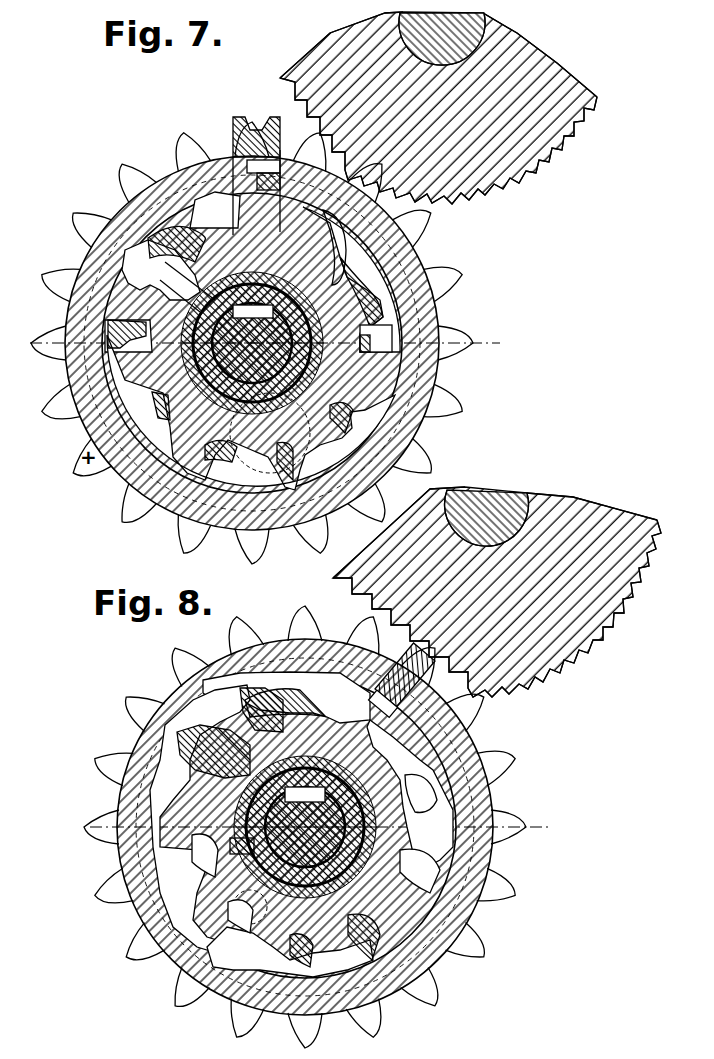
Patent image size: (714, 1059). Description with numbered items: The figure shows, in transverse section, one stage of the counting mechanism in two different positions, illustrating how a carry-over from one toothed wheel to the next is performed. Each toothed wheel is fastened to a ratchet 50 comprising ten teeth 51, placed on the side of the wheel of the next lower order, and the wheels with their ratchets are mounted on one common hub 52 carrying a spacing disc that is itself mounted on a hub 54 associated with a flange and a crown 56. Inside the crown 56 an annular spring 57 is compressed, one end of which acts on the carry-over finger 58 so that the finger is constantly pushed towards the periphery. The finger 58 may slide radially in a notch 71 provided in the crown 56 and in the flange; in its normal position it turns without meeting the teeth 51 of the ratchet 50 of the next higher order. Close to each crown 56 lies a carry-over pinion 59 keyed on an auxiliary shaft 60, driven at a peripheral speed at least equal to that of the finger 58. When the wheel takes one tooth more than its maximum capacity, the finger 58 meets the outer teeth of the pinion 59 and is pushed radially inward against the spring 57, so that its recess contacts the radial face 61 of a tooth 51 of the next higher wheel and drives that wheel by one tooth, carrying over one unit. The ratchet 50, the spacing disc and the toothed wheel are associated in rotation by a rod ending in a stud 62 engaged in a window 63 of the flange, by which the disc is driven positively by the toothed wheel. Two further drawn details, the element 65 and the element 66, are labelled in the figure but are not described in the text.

In FIG. 7, the ratchet 50 is at (168, 412).
In FIG. 8, the ratchet 50 is at (225, 870).
In FIG. 7, the tooth 51 is at (370, 290).
In FIG. 8, the tooth 51 is at (428, 898).
In FIG. 7, the hub 52 is at (180, 347).
In FIG. 7, the hub 54 is at (350, 408).
In FIG. 8, the hub 54 is at (403, 934).
In FIG. 7, the crown 56 is at (135, 480).
In FIG. 8, the crown 56 is at (160, 905).
In FIG. 7, the annular spring 57 is at (236, 135).
In FIG. 8, the annular spring 57 is at (335, 692).
In FIG. 7, the carry-over finger 58 is at (245, 120).
In FIG. 8, the carry-over finger 58 is at (432, 672).
In FIG. 7, the carry-over pinion 59 is at (548, 150).
In FIG. 8, the carry-over pinion 59 is at (600, 625).
In FIG. 7, the auxiliary shaft 60 is at (400, 22).
In FIG. 8, the auxiliary shaft 60 is at (500, 490).
In FIG. 7, the radial face 61 is at (322, 222).
In FIG. 8, the radial face 61 is at (412, 782).
In FIG. 7, the stud 62 is at (240, 458).
In FIG. 8, the stud 62 is at (258, 935).
In FIG. 7, the window 63 is at (295, 455).
In FIG. 8, the window 63 is at (305, 935).
In FIG. 7, the spring 65 is at (170, 266).
In FIG. 8, the spring 65 is at (220, 730).
In FIG. 7, the spring 66 is at (162, 282).
In FIG. 8, the spring 66 is at (200, 765).
In FIG. 7, the notch 71 is at (238, 236).